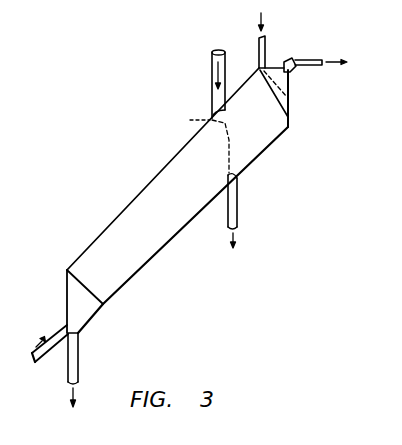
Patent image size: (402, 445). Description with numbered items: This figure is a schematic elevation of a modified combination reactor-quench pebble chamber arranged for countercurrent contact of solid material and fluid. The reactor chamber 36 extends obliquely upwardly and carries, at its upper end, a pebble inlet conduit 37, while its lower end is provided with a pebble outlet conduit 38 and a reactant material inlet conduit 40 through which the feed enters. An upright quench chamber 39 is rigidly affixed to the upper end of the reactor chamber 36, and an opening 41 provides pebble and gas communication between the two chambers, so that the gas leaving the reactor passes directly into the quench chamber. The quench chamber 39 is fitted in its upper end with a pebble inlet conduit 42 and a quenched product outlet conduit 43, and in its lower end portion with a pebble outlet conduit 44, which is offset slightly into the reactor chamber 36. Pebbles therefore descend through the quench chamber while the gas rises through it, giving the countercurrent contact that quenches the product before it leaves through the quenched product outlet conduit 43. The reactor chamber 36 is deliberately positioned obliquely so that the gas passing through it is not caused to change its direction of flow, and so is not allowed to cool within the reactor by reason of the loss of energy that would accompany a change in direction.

The reactor chamber 36 is at (118, 217).
The pebble inlet conduit 37 is at (212, 79).
The pebble outlet conduit 38 is at (78, 362).
The quench chamber 39 is at (267, 147).
The feed inlet pipe 40 is at (38, 361).
The opening 41 is at (228, 110).
The pebble inlet conduit 42 is at (266, 50).
The quenched product outlet conduit 43 is at (300, 59).
The pebble outlet conduit 44 is at (238, 214).